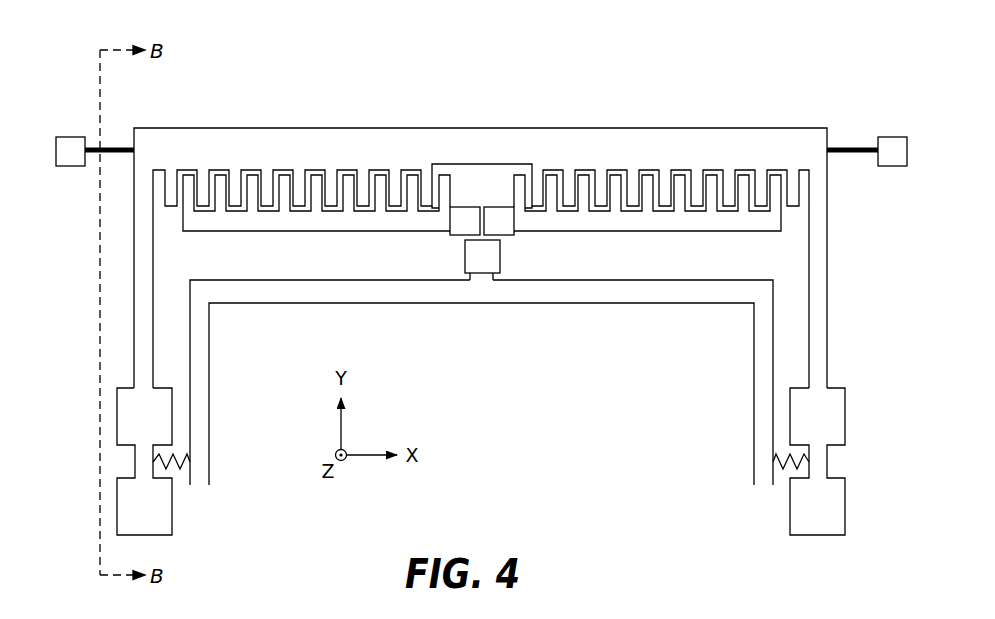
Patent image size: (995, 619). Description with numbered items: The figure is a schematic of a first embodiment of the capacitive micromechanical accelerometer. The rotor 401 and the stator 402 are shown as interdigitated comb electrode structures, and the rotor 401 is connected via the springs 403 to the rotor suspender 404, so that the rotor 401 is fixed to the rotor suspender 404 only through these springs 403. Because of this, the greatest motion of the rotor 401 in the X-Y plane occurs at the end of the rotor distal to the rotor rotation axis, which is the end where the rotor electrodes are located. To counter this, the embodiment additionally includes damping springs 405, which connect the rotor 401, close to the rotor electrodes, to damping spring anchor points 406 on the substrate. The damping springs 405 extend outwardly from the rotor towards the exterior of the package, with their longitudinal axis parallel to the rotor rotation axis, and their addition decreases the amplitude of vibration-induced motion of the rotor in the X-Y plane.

The rotor 401 is at (528, 126).
The stator 402 is at (292, 240).
The springs 403 is at (179, 474).
The rotor suspender 404 is at (542, 305).
The damping springs 405 is at (120, 143).
The damping spring anchor points 406 is at (69, 168).